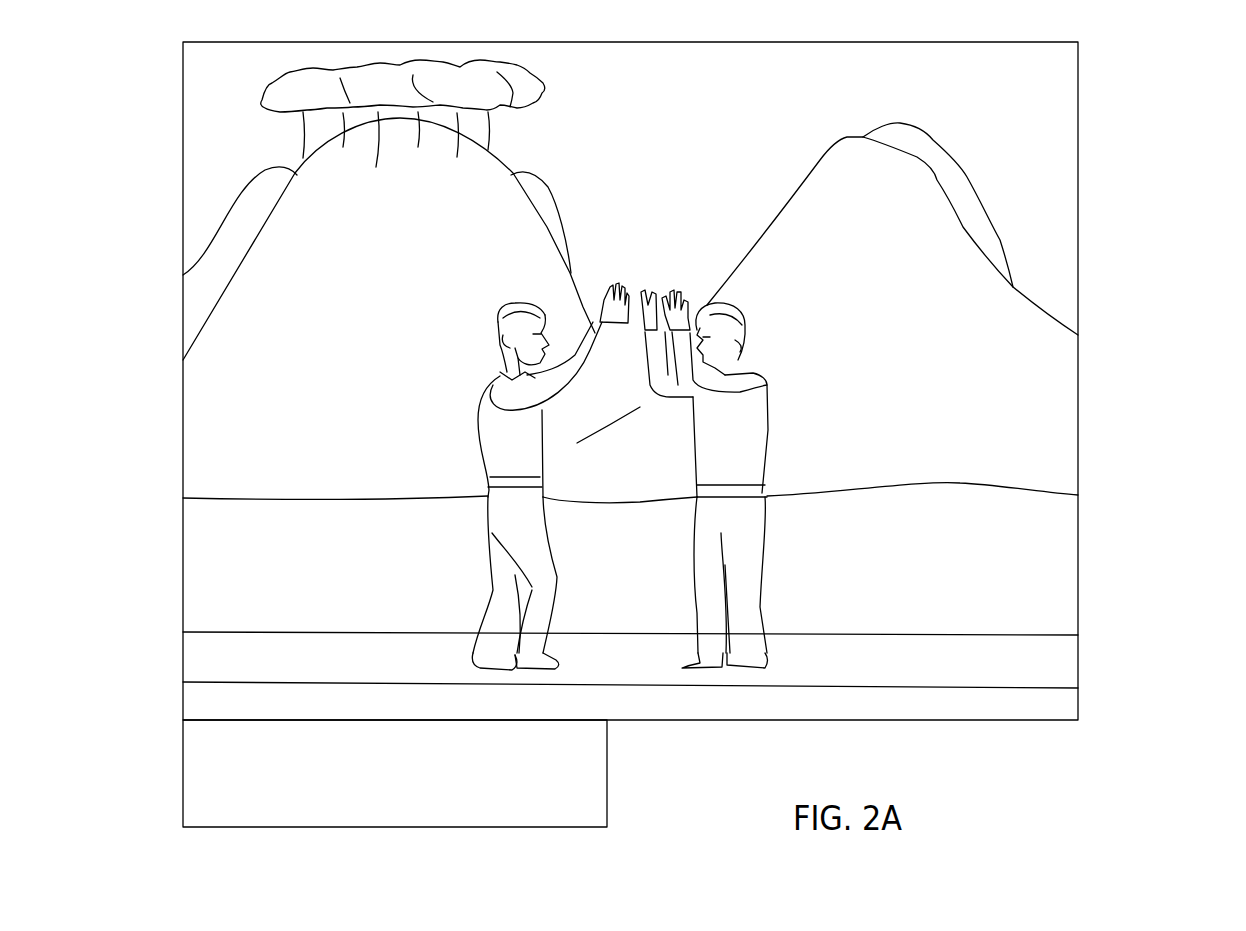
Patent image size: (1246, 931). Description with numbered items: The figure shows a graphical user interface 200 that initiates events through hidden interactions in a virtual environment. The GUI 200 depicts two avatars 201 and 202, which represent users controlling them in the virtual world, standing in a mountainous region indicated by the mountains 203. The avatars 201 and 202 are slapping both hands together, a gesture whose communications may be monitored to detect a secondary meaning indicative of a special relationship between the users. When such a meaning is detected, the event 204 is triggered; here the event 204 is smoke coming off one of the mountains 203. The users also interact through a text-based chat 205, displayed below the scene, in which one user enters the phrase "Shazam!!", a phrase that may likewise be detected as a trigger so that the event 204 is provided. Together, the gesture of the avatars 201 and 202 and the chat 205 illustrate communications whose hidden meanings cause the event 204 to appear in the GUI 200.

The graphical user interface 200 is at (1123, 102).
The avatar 201 is at (493, 377).
The avatar 202 is at (767, 385).
The mountains 203 is at (795, 125).
The event 204 is at (547, 157).
The text-based chat 205 is at (583, 817).